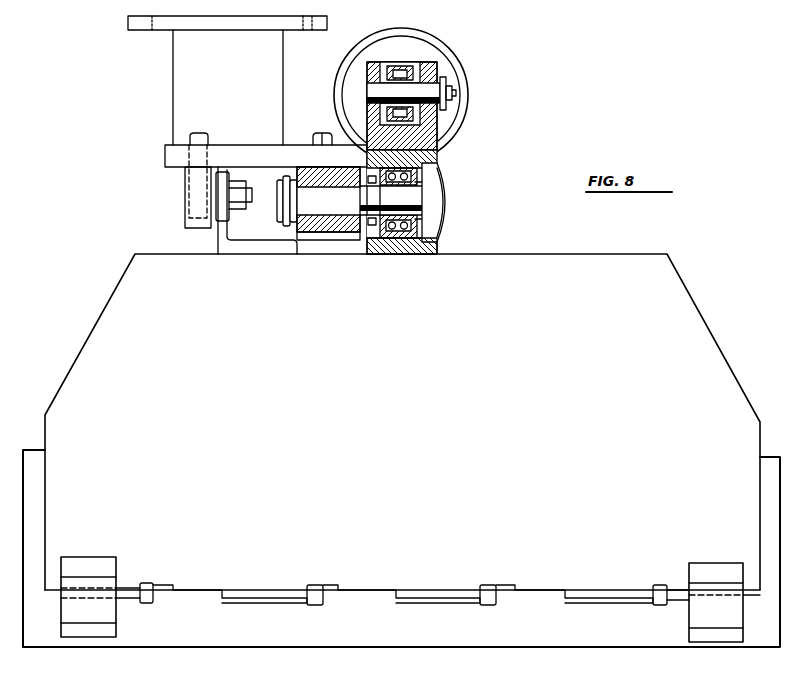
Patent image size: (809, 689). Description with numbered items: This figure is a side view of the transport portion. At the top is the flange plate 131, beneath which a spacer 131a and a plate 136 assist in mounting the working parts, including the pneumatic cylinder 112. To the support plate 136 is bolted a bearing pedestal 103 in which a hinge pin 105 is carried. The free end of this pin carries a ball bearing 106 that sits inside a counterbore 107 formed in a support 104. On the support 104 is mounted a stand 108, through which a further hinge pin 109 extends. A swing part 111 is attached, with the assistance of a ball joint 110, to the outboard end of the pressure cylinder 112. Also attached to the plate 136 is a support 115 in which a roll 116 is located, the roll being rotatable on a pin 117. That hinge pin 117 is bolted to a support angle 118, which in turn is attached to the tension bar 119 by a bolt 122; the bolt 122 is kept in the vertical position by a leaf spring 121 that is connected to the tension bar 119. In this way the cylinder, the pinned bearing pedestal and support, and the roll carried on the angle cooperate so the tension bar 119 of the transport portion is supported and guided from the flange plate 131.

The bearing pedestal 103 is at (346, 236).
The support 104 is at (437, 251).
The hinge pin 105 is at (366, 232).
The ball bearing 106 is at (418, 181).
The counterbore 107 is at (438, 228).
The stand 108 is at (425, 142).
The hinge pin 109 is at (368, 92).
The ball joint 110 is at (442, 84).
The swing part 111 is at (404, 62).
The pneumatic cylinder 112 is at (428, 48).
The support 115 is at (185, 226).
The roll 116 is at (188, 200).
The pin 117 is at (227, 215).
The support angle 118 is at (276, 252).
The tension bar 119 is at (694, 348).
The leaf spring 121 is at (86, 625).
The bolt 122 is at (126, 590).
The flange plate 131 is at (189, 22).
The spacer 131a is at (186, 82).
The plate 136 is at (288, 150).